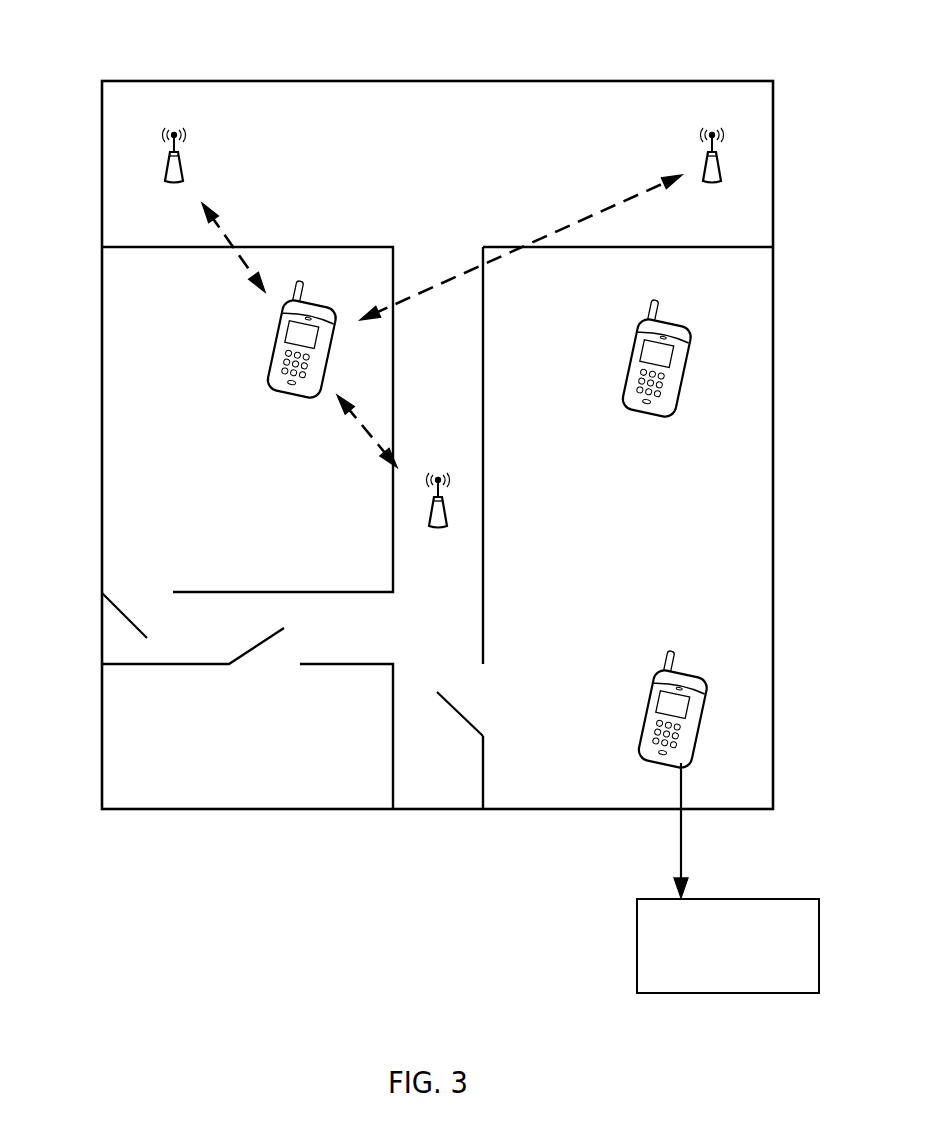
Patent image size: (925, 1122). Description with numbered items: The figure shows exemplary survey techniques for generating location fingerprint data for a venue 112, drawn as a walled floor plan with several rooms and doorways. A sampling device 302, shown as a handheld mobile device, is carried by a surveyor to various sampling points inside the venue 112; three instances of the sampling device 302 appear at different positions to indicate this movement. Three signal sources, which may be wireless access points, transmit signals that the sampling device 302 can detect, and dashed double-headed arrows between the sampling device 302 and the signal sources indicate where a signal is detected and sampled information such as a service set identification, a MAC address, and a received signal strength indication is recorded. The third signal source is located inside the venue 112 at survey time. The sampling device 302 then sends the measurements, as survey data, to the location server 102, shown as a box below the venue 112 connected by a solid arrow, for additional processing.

The venue 112 is at (136, 81).
The sampling device 302 is at (270, 347).
The location server 102 is at (637, 947).